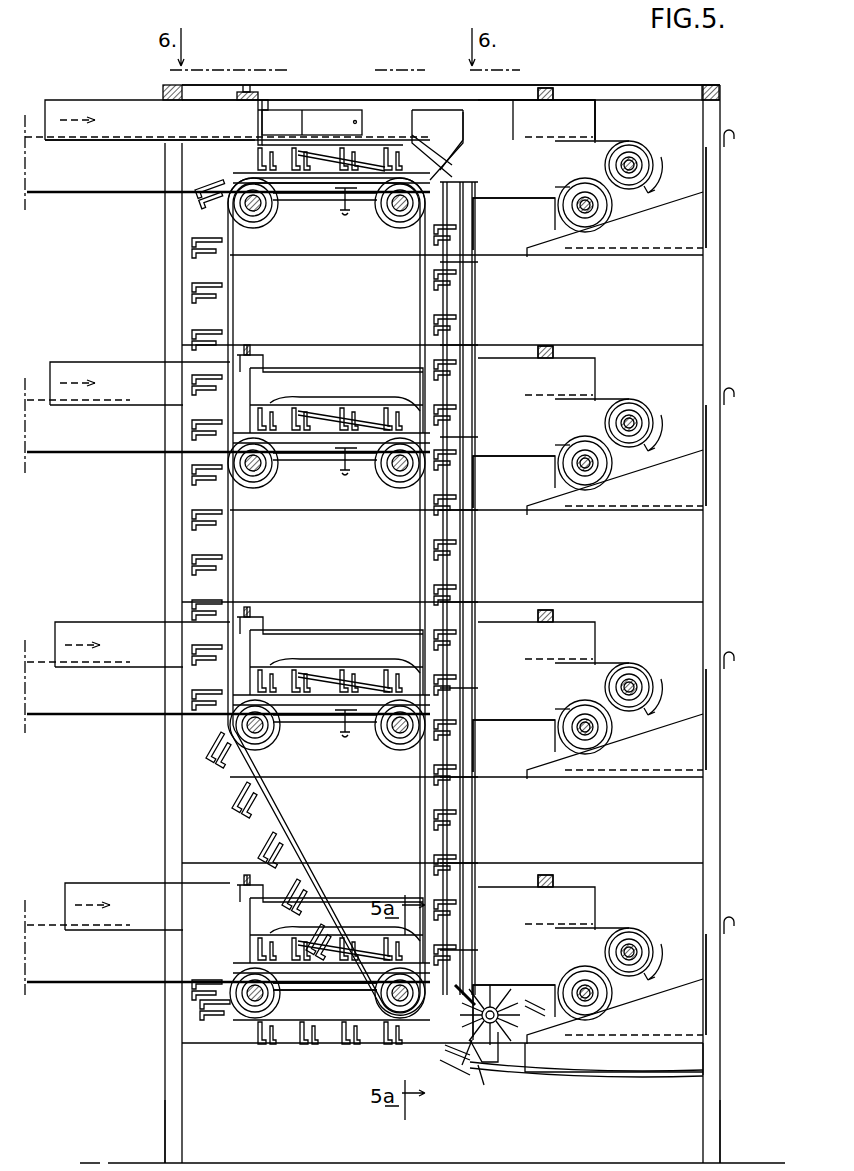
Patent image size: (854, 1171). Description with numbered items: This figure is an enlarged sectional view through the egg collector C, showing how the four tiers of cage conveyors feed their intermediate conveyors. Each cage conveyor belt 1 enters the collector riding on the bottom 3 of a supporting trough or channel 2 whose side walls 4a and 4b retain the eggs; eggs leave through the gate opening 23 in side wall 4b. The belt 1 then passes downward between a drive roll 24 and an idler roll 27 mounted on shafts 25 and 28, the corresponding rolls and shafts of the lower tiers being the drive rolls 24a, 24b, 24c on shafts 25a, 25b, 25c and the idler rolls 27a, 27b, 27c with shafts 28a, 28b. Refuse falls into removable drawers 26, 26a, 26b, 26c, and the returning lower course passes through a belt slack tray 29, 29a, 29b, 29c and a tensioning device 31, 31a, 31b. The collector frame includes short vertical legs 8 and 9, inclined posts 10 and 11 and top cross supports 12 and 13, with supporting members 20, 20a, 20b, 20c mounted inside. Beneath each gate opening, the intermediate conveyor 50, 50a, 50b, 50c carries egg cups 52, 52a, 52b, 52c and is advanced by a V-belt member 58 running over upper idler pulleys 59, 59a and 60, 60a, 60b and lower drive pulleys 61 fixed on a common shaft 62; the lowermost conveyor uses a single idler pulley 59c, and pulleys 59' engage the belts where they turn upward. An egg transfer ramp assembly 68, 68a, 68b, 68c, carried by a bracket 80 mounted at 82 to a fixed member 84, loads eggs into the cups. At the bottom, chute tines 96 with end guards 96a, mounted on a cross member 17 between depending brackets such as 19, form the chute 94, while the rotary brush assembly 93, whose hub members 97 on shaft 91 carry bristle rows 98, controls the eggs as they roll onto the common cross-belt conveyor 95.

The cage conveyor belt 1 is at (30, 103).
The supporting trough or channel 2 is at (80, 105).
The trough bottom 3 is at (100, 145).
The side wall 4a is at (330, 103).
The side wall 4b is at (130, 128).
The short vertical leg 8 is at (168, 1118).
The short vertical leg 9 is at (715, 1133).
The inclined post 10 is at (168, 222).
The inclined post 11 is at (715, 557).
The top cross support 12 is at (163, 90).
The top cross support 13 is at (708, 88).
The egg collector C is at (731, 91).
The cross member 17 is at (488, 1080).
The depending bracket 19 is at (470, 1056).
The supporting member 20 is at (628, 100).
The supporting member 20a is at (589, 430).
The supporting member 20b is at (589, 694).
The processing unit 20c is at (589, 959).
The gate opening or gap 23 is at (265, 108).
The drive roll 24 is at (638, 150).
The drive roll 24a is at (633, 408).
The drive roll 24b is at (633, 670).
The drive roll 24c is at (635, 935).
The shaft 25 is at (633, 163).
The shaft 25a is at (633, 422).
The shaft 25b is at (633, 686).
The shaft 25c is at (633, 950).
The removable drawer 26 is at (690, 230).
The removable drawer 26a is at (685, 480).
The removable drawer 26b is at (690, 742).
The removable drawer 26c is at (690, 1005).
The idler roll 27 is at (583, 185).
The idler roll 27a is at (583, 445).
The idler roll 27b is at (580, 712).
The idler roll 27c is at (583, 975).
The shaft 28 is at (585, 212).
The shaft 28a is at (587, 470).
The shaft 28b is at (588, 734).
The belt slack tray 29 is at (498, 205).
The belt slack tray 29a is at (512, 465).
The belt slack tray 29b is at (505, 725).
The belt slack tray 29c is at (545, 980).
The belt tensioning device 31 is at (342, 200).
The belt tensioning device 31a is at (345, 456).
The belt tensioning device 31b is at (343, 727).
The intermediate conveyor 50 is at (255, 312).
The intermediate conveyor 50a is at (303, 438).
The intermediate conveyor 50b is at (315, 700).
The intermediate conveyor 50c is at (282, 1030).
The egg cup 52 is at (245, 160).
The egg cup 52a is at (322, 412).
The egg cup 52b is at (280, 692).
The egg cup 52c is at (248, 958).
The V-belt member 58 is at (238, 578).
The upper idler pulley 59 is at (260, 216).
The upper idler pulley 59a is at (256, 482).
The pulley 59' is at (274, 751).
The idler pulley 59c is at (248, 1012).
The upper idler pulley 60 is at (395, 222).
The upper idler pulley 60a is at (396, 482).
The upper idler pulley 60b is at (397, 745).
The lower drive pulley 61 is at (380, 998).
The common shaft 62 is at (400, 1008).
The egg transfer ramp assembly 68 is at (322, 158).
The egg transfer ramp assembly 68a is at (350, 410).
The egg transfer ramp assembly 68b is at (340, 672).
The egg transfer ramp assembly 68c is at (352, 882).
The bracket 80 is at (258, 107).
The mounting location 82 is at (250, 99).
The fixed member 84 is at (245, 90).
The shaft 91 is at (492, 1000).
The rotary brush assembly 93 is at (530, 1050).
The chute 94 is at (470, 1052).
The cross-belt conveyor 95 is at (640, 1078).
The chute tine 96 is at (450, 1050).
The guide plate 96a is at (482, 1082).
The hub member 97 is at (540, 1032).
The bristle row 98 is at (470, 995).